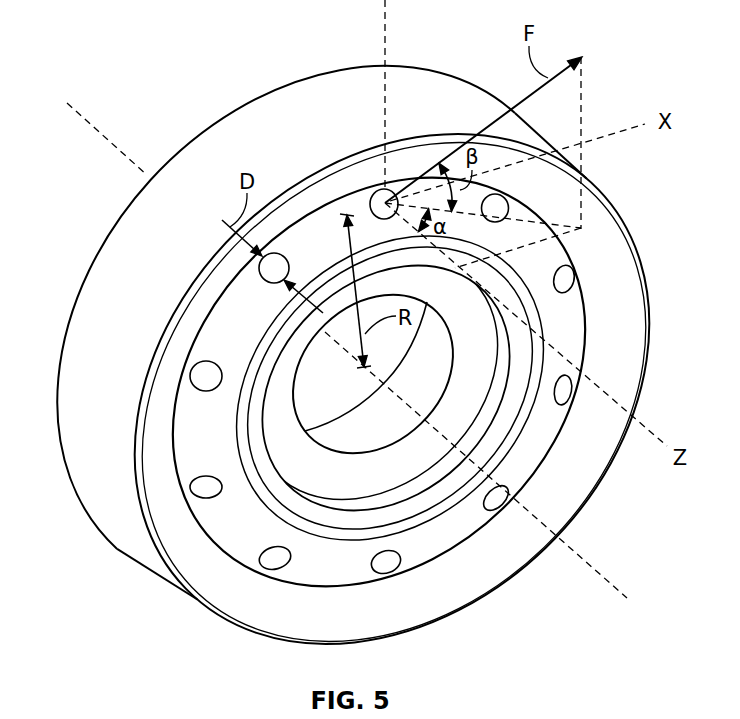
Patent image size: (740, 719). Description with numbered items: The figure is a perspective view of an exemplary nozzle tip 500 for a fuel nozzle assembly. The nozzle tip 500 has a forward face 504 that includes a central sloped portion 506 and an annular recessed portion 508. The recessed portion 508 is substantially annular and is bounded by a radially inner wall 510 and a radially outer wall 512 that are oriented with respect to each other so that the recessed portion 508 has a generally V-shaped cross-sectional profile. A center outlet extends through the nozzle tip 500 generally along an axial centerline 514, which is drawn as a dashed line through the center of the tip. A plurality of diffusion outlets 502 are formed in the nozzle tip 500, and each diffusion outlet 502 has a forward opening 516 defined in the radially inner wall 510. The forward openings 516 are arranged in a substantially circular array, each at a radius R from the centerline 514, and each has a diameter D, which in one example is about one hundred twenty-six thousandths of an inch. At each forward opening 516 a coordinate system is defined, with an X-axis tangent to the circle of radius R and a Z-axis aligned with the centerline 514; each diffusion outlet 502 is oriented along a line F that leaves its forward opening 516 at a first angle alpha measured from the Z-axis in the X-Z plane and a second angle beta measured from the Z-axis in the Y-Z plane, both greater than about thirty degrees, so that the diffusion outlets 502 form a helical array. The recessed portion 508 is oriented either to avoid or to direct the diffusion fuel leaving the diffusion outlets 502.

The nozzle tip 500 is at (122, 60).
The diffusion outlet 502 is at (393, 562).
The forward face 504 is at (573, 464).
The central sloped portion 506 is at (368, 486).
The annular recessed portion 508 is at (375, 626).
The radially inner wall 510 is at (265, 540).
The radially outer wall 512 is at (259, 620).
The axial centerline 514 is at (600, 573).
The forward opening 516 is at (572, 277).